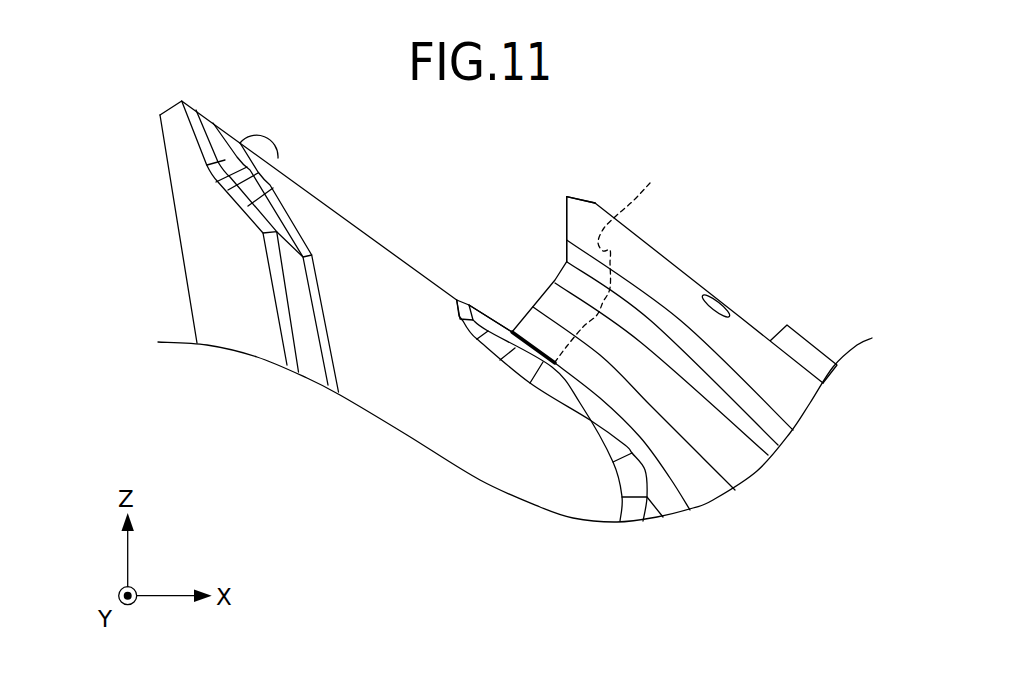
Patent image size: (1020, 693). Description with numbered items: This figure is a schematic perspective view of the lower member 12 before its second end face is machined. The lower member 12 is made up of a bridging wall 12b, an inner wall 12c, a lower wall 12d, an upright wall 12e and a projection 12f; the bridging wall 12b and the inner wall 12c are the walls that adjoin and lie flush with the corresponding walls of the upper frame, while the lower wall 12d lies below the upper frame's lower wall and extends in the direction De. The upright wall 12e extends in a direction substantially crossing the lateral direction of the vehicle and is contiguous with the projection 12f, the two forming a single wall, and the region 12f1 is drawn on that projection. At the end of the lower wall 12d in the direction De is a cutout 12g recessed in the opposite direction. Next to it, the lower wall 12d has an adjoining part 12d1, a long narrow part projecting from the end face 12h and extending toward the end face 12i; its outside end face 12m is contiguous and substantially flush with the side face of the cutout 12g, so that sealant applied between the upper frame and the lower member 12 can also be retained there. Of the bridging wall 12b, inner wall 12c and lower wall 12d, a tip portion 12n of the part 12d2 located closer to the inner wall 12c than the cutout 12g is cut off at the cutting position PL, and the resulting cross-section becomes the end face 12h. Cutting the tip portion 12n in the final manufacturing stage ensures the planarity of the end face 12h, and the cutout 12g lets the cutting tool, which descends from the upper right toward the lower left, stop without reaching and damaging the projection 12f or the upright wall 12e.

The lower member 12 is at (717, 503).
The bridging wall 12b is at (643, 268).
The inner wall 12c is at (630, 362).
The lower wall 12d is at (590, 400).
The adjoining part 12d1 is at (490, 318).
The part located closer to the inner wall than the cutout 12d2 is at (528, 340).
The upright wall 12e is at (533, 463).
The projection 12f is at (348, 317).
The rib upper portion 12f1 is at (207, 166).
The cutout 12g is at (546, 366).
The end face 12h is at (644, 260).
The end face 12i is at (468, 331).
The outside end face 12m is at (510, 362).
The tip portion 12n is at (585, 218).